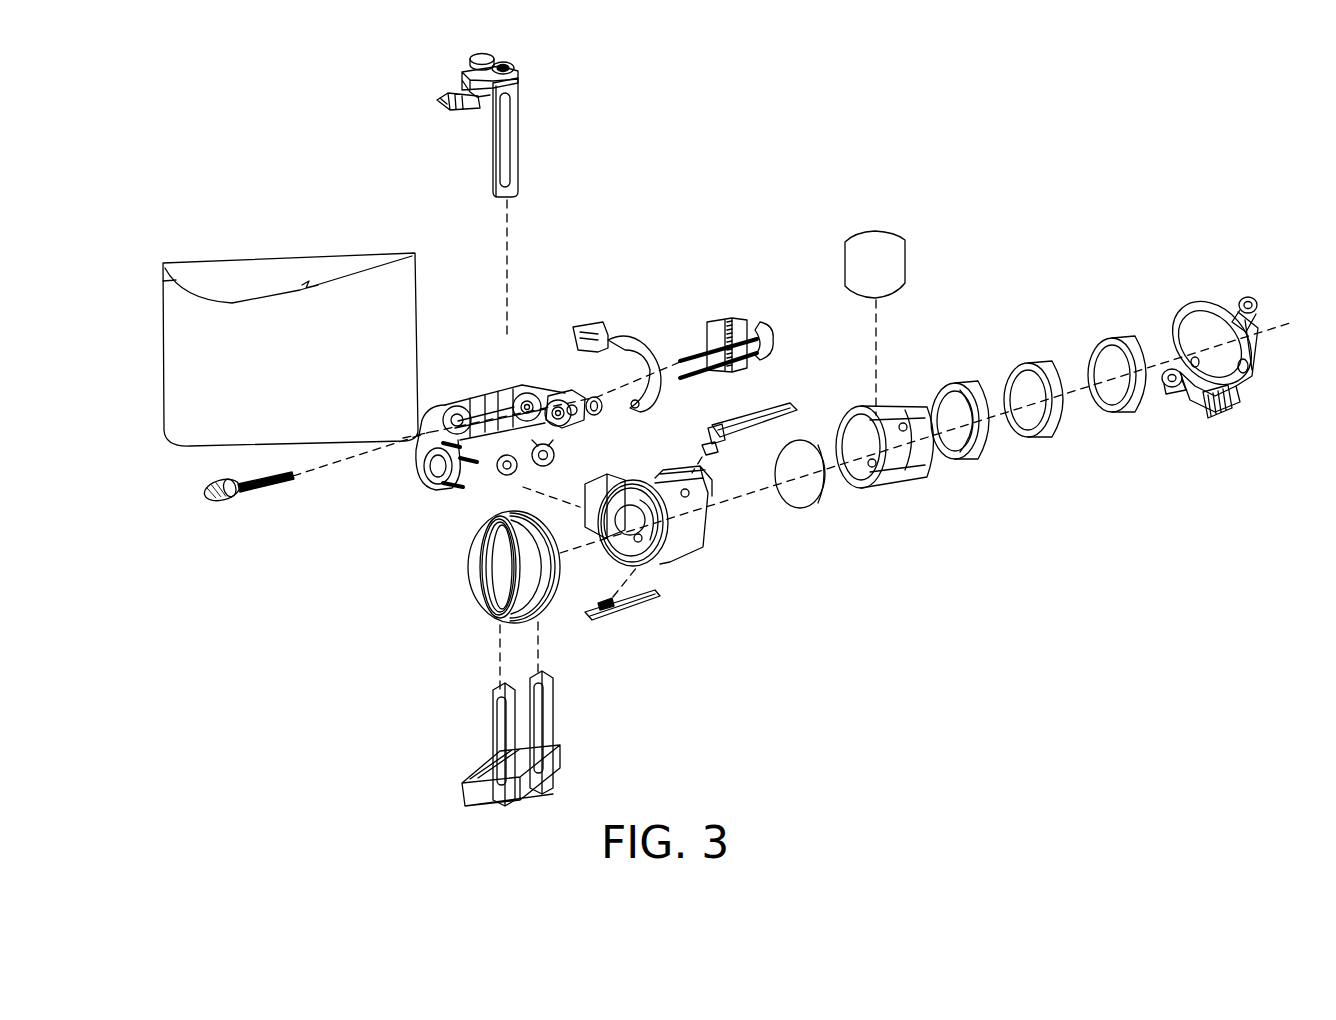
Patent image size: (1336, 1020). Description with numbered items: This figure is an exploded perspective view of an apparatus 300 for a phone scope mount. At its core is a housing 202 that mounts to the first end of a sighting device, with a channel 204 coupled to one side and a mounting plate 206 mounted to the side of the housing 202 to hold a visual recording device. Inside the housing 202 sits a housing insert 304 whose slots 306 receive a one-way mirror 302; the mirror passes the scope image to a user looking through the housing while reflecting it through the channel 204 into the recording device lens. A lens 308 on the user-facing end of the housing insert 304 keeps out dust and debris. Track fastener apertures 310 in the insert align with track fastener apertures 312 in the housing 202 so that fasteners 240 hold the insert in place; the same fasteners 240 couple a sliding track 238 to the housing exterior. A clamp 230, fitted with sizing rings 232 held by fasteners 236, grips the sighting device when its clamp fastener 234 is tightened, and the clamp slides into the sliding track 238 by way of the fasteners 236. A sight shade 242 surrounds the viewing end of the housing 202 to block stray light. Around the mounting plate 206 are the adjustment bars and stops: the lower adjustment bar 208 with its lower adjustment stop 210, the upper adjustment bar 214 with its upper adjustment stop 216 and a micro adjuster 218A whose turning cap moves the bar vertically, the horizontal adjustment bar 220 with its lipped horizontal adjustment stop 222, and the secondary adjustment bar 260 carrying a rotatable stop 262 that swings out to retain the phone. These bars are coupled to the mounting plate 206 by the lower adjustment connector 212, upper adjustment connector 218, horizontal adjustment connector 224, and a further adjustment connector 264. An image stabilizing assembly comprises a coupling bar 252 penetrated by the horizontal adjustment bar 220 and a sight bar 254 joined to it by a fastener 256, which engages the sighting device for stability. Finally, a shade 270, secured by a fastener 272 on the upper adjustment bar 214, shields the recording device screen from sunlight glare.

The apparatus 300 is at (172, 85).
The mounting plate 206 is at (580, 208).
The shade 270 is at (245, 268).
The secondary adjustment bar 260 is at (277, 485).
The rotatable stop 262 is at (226, 500).
The upper adjustment bar 214 is at (510, 128).
The micro adjuster 218A is at (515, 68).
The fastener 272 is at (487, 53).
The upper adjustment stop 216 is at (446, 101).
The adjustment connector 264 is at (447, 410).
The upper adjustment connector 218 is at (532, 400).
The horizontal adjustment connector 224 is at (548, 393).
The lower adjustment connector 212 is at (500, 470).
The coupling bar 252 is at (579, 420).
The fastener 256 is at (599, 412).
The sight bar 254 is at (637, 343).
The horizontal adjustment bar 220 is at (687, 352).
The horizontal adjustment stop 222 is at (718, 320).
The sliding track 238 is at (747, 422).
The fastener 240 is at (727, 433).
The channel 204 is at (613, 492).
The housing 202 is at (697, 537).
The track fastener apertures 312 is at (688, 496).
The sight shade 242 is at (531, 550).
The lower adjustment bar 208 is at (550, 729).
The lower adjustment stop 210 is at (470, 768).
The lens 308 is at (808, 503).
The housing insert 304 is at (918, 477).
The slots 306 is at (914, 410).
The track fastener apertures 310 is at (909, 429).
The one-way mirror 302 is at (885, 231).
The sizing rings 232 is at (964, 381).
The clamp 230 is at (1207, 297).
The fastener 236 is at (1226, 294).
The clamp fastener 234 is at (1212, 412).